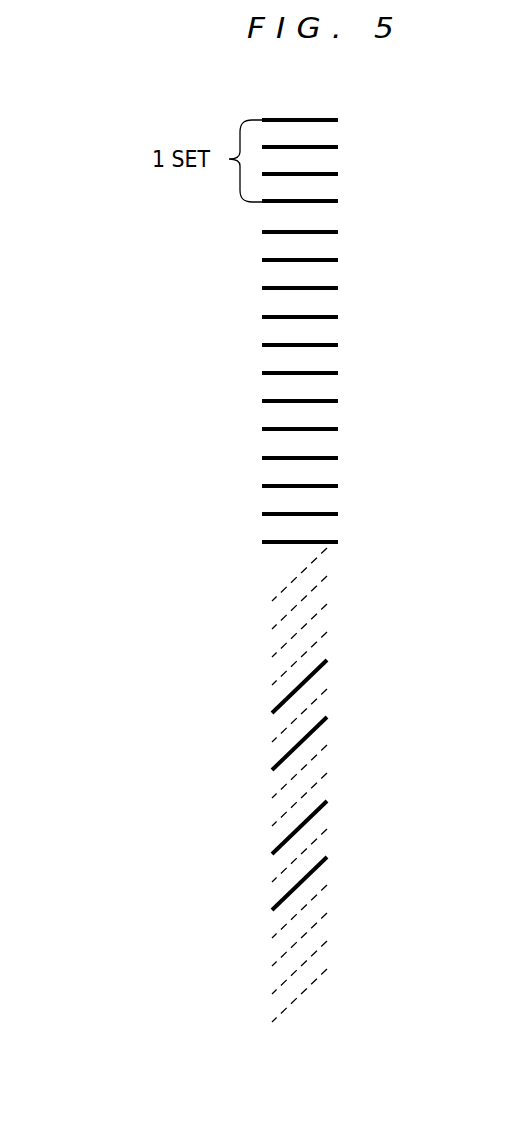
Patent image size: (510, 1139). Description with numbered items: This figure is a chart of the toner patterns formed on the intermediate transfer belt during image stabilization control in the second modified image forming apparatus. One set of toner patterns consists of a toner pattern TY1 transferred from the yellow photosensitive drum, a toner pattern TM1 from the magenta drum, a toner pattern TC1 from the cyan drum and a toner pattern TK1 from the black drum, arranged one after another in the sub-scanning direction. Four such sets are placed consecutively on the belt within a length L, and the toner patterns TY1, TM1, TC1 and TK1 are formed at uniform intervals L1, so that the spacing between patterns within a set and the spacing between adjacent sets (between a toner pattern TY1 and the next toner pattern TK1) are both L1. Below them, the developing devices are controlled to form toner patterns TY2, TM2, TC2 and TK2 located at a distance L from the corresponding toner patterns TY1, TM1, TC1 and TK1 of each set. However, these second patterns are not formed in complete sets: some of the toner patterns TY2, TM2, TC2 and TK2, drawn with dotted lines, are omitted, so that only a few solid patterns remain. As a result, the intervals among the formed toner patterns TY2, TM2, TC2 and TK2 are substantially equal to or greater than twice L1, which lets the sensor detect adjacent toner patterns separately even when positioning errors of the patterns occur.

The toner pattern TK1 is at (338, 120).
The toner pattern TC1 is at (338, 147).
The toner pattern TM1 is at (338, 174).
The toner pattern TY1 is at (338, 201).
The toner pattern TK2 is at (327, 548).
The toner pattern TC2 is at (327, 576).
The toner pattern TM2 is at (327, 604).
The toner pattern TY2 is at (327, 632).
The length L is at (303, 683).
The interval L1 is at (213, 260).